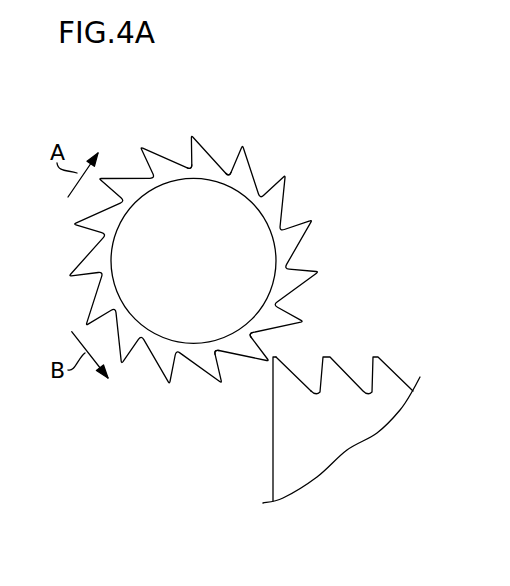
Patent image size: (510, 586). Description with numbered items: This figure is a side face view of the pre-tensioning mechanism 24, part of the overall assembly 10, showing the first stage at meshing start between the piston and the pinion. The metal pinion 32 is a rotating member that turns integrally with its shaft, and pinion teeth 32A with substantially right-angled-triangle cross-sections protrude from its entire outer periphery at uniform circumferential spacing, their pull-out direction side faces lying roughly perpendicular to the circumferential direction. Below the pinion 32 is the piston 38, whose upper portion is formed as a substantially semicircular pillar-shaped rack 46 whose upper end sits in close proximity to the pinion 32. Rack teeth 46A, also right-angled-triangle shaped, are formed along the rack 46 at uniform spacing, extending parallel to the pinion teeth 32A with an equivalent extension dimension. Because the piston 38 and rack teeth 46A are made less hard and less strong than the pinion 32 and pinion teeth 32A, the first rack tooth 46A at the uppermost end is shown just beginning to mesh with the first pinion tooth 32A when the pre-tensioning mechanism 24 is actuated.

The pre-tensioning mechanism 24 is at (195, 112).
The drive unit 10 is at (193, 234).
The pinion 32 is at (207, 152).
The pinion tooth 32A is at (243, 355).
The rack 46 is at (273, 463).
The piston 38 is at (286, 411).
The rack tooth 46A is at (302, 374).